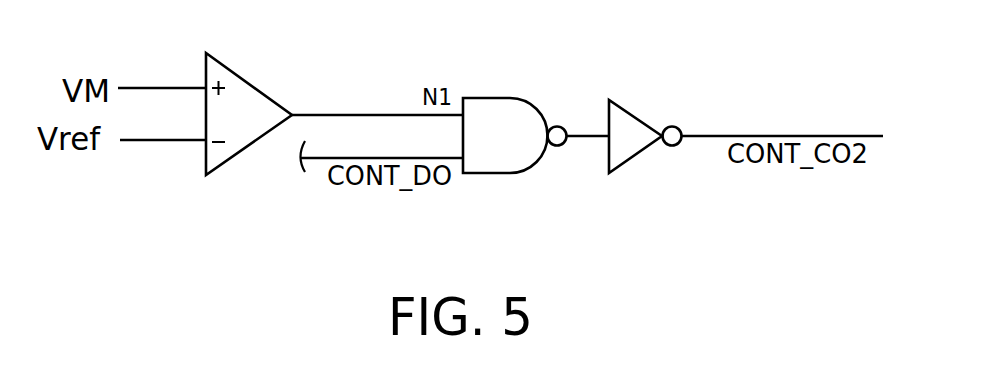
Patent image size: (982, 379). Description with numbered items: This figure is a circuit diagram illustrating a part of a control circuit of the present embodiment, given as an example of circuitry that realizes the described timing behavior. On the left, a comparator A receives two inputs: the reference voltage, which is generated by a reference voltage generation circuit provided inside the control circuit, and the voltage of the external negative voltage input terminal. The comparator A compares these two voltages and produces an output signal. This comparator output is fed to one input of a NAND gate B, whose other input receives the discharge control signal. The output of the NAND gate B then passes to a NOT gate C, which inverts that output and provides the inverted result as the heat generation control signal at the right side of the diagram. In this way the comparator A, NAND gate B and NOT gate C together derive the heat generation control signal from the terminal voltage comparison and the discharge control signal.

The comparator A is at (230, 70).
The NAND gate B is at (497, 98).
The NOT gate C is at (627, 111).